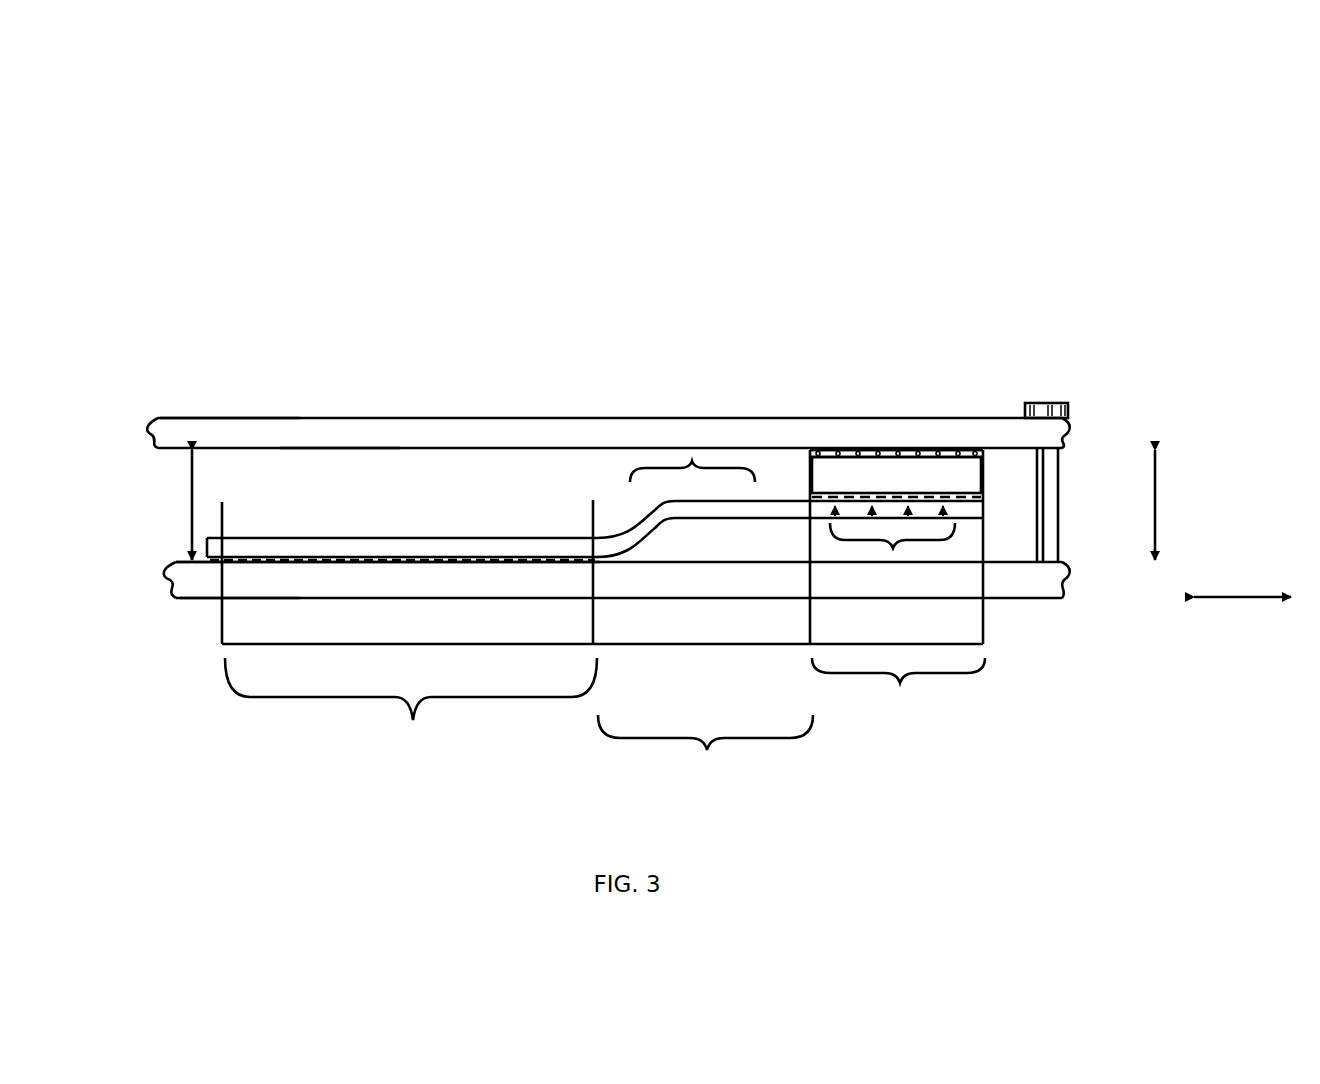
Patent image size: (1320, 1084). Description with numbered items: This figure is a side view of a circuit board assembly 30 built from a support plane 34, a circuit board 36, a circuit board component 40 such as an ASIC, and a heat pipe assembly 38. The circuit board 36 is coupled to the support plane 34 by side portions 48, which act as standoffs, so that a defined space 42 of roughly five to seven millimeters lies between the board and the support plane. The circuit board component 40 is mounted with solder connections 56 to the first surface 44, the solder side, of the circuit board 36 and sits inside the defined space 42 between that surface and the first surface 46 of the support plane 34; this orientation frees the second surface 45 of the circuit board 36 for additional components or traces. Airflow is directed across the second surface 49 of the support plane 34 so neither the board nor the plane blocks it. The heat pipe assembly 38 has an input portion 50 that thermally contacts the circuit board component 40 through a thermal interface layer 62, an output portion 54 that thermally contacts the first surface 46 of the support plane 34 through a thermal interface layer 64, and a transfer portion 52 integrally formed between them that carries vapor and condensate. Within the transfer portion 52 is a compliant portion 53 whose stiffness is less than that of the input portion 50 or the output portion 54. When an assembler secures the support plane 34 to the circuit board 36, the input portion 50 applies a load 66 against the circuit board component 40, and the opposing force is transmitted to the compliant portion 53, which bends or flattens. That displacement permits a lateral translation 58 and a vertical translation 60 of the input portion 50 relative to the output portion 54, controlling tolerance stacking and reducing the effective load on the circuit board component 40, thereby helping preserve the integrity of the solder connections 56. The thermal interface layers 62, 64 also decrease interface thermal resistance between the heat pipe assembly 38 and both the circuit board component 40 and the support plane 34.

The circuit board assembly 30 is at (903, 156).
The support plane 34 is at (182, 599).
The circuit board 36 is at (260, 428).
The heat pipe assembly 38 is at (382, 481).
The circuit board component 40 is at (887, 470).
The defined space 42 is at (185, 500).
The first surface of the circuit board 44 is at (340, 449).
The second surface of the circuit board 45 is at (182, 418).
The first surface of the support plane 46 is at (178, 554).
The side portions 48 is at (1060, 497).
The second surface of the support plane 49 is at (197, 603).
The input portion 50 is at (897, 582).
The transfer portion 52 is at (705, 750).
The compliant portion 53 is at (692, 455).
The output portion 54 is at (411, 705).
The solder connections 56 is at (833, 450).
The lateral translation 58 is at (1158, 500).
The vertical translation 60 is at (1233, 598).
The thermal interface layer 62 is at (985, 512).
The thermal interface layer 64 is at (490, 556).
The load 66 is at (892, 542).